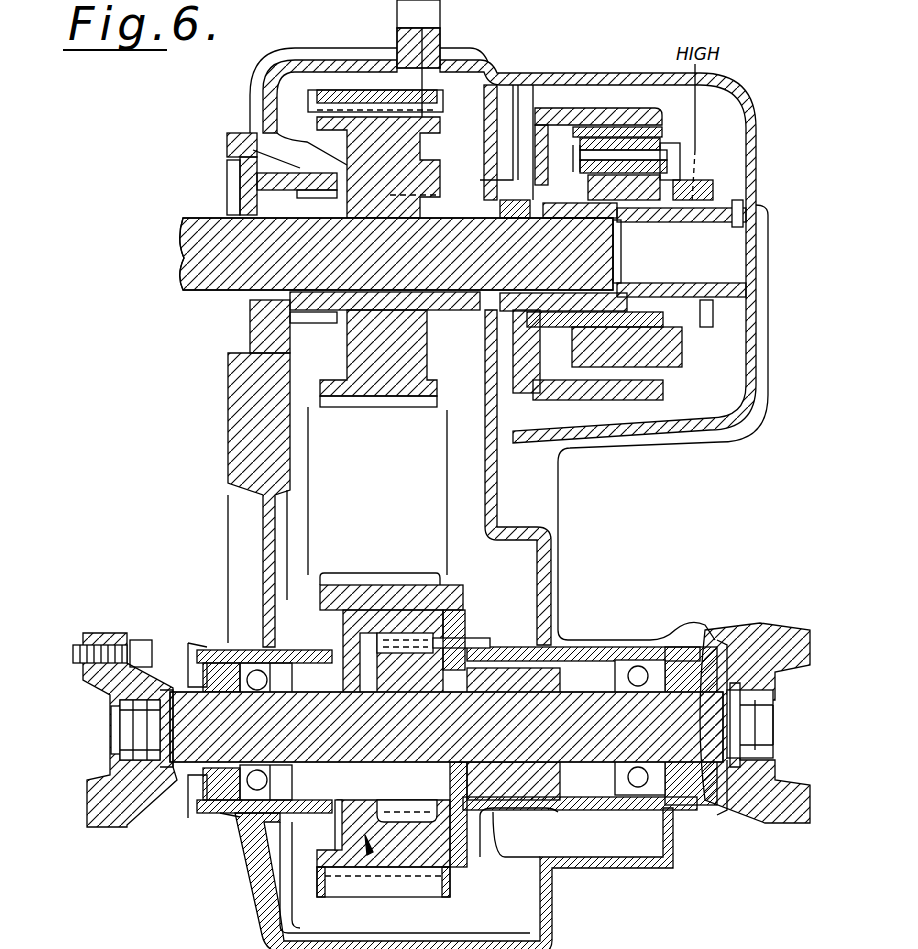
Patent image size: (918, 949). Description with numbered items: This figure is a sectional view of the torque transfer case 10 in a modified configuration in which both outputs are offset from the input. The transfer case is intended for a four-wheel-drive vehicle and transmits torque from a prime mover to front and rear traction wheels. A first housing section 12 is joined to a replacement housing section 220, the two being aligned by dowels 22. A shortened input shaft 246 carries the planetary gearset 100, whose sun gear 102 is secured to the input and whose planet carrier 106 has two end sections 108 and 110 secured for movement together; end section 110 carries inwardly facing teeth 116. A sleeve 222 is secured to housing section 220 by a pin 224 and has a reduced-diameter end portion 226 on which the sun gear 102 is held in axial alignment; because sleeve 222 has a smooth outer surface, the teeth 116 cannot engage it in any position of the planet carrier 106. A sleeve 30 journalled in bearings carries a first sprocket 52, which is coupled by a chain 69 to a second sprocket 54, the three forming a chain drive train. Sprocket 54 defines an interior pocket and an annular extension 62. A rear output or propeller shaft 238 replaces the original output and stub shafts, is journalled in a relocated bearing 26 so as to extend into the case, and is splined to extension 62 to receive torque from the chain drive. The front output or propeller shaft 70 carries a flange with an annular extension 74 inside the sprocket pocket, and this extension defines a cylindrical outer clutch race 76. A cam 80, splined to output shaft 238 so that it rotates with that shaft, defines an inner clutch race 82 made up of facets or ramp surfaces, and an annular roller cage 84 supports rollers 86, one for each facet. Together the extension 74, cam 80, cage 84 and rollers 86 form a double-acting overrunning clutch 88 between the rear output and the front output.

The torque transfer case 10 is at (188, 204).
The first housing section 12 is at (228, 445).
The dowels 22 is at (441, 12).
The bearing 26 is at (640, 666).
The sleeve 30 is at (310, 200).
The first sprocket 52 is at (392, 405).
The second sprocket 54 is at (352, 576).
The annular extension 62 is at (548, 782).
The chain 69 is at (450, 535).
The front output or propeller shaft 70 is at (175, 726).
The annular extension 74 is at (420, 835).
The outer clutch race 76 is at (418, 822).
The cam 80 is at (422, 650).
The inner clutch race 82 is at (385, 824).
The annular roller cage 84 is at (458, 823).
The rollers 86 is at (430, 636).
The double-acting overrunning clutch 88 is at (370, 842).
The planetary gearset 100 is at (638, 106).
The sun gear 102 is at (598, 218).
The planet carrier 106 is at (683, 155).
The end section 108 is at (530, 183).
The end section 110 is at (680, 190).
The inwardly facing teeth 116 is at (698, 302).
The housing section 220 is at (562, 524).
The sleeve 222 is at (757, 290).
The pin 224 is at (745, 215).
The end portion 226 is at (630, 283).
The rear output or propeller shaft 238 is at (735, 733).
The shortened input shaft 246 is at (186, 291).